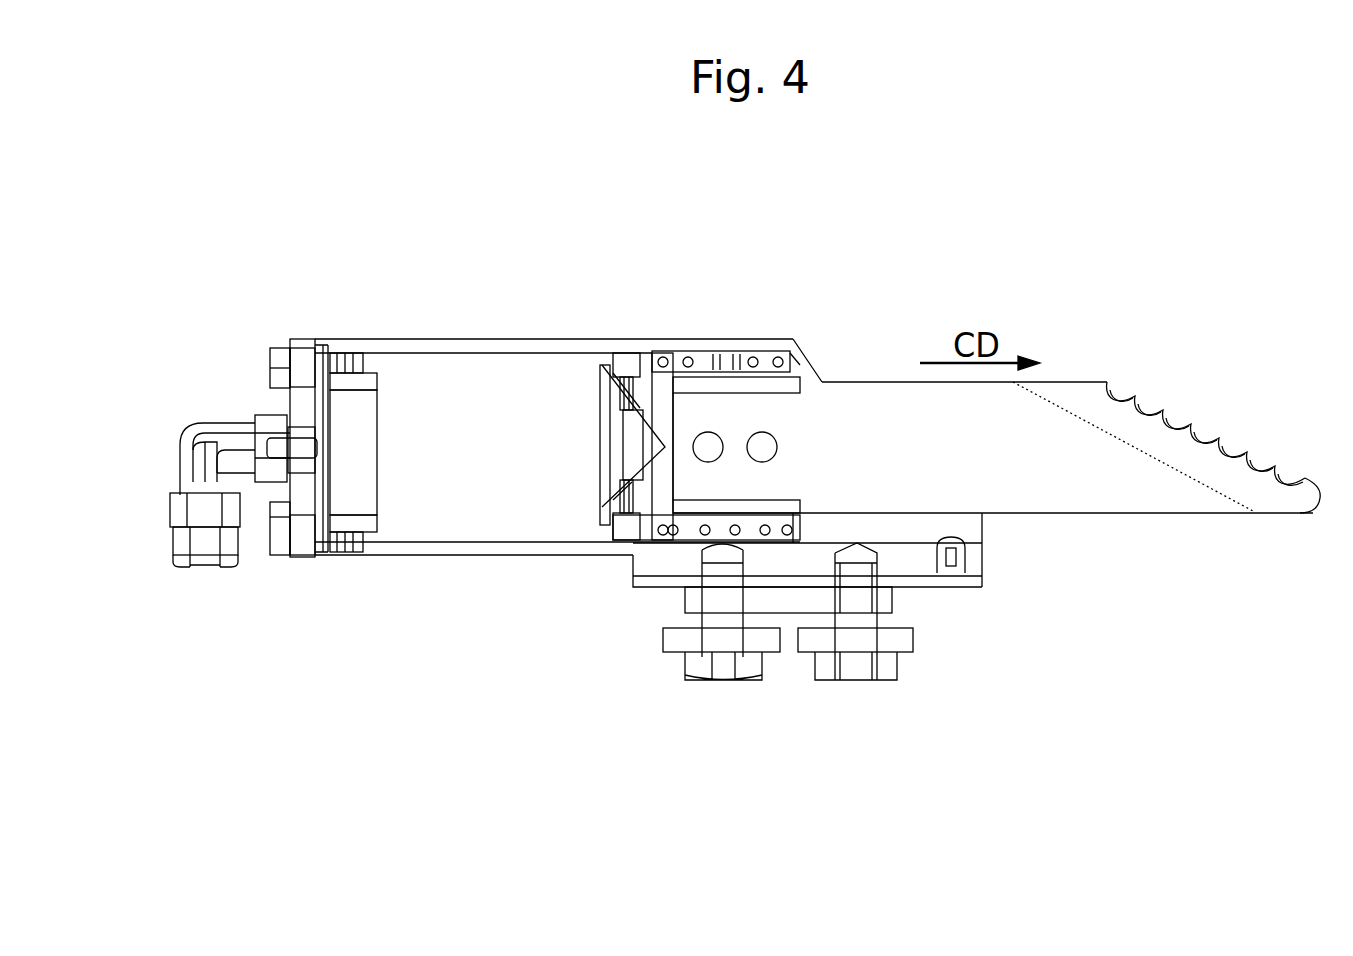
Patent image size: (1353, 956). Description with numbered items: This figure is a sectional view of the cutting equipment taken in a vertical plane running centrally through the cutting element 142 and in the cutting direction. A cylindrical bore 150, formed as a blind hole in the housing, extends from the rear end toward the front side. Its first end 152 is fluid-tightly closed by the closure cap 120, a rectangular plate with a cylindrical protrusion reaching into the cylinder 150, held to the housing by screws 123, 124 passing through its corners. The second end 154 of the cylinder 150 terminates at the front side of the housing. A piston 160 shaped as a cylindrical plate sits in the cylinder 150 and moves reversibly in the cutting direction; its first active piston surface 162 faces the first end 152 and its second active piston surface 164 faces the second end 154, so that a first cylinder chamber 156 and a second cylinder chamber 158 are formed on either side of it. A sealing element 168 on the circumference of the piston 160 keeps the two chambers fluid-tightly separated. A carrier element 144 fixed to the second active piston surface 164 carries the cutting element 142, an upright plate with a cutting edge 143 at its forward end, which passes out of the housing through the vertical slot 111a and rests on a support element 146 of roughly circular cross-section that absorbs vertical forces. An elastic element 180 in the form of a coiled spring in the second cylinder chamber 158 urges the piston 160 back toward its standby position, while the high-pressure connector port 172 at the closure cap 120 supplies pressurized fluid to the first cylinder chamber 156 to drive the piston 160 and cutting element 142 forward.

The vertical slot 111a is at (814, 374).
The closure cap 120 is at (300, 345).
The screw 123 is at (268, 352).
The screw 124 is at (275, 537).
The cutting element 142 is at (1062, 478).
The cutting edge 143 is at (1173, 413).
The carrier element 144 is at (692, 392).
The support element 146 is at (967, 532).
The cylindrical bore 150 is at (475, 345).
The first end 152 is at (323, 350).
The second end 154 is at (783, 368).
The first cylinder chamber 156 is at (437, 393).
The second cylinder chamber 158 is at (682, 360).
The piston 160 is at (612, 372).
The first active piston surface 162 is at (598, 372).
The second active piston surface 164 is at (653, 360).
The sealing element 168 is at (630, 353).
The high-pressure connector port 172 is at (182, 507).
The elastic element 180 is at (670, 532).